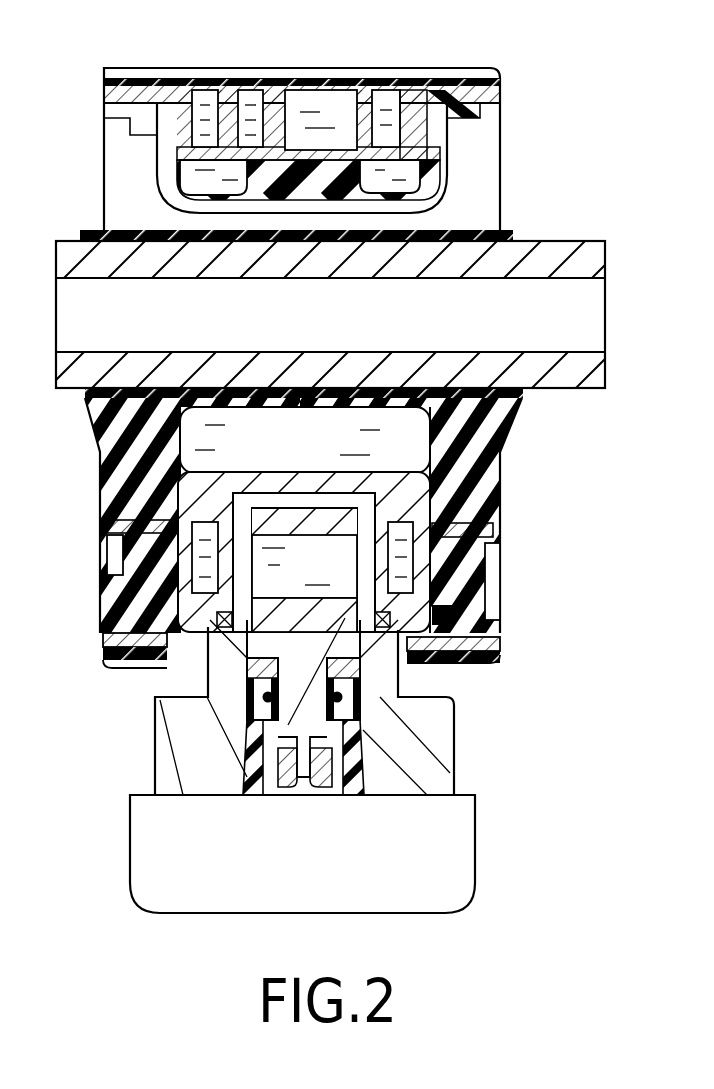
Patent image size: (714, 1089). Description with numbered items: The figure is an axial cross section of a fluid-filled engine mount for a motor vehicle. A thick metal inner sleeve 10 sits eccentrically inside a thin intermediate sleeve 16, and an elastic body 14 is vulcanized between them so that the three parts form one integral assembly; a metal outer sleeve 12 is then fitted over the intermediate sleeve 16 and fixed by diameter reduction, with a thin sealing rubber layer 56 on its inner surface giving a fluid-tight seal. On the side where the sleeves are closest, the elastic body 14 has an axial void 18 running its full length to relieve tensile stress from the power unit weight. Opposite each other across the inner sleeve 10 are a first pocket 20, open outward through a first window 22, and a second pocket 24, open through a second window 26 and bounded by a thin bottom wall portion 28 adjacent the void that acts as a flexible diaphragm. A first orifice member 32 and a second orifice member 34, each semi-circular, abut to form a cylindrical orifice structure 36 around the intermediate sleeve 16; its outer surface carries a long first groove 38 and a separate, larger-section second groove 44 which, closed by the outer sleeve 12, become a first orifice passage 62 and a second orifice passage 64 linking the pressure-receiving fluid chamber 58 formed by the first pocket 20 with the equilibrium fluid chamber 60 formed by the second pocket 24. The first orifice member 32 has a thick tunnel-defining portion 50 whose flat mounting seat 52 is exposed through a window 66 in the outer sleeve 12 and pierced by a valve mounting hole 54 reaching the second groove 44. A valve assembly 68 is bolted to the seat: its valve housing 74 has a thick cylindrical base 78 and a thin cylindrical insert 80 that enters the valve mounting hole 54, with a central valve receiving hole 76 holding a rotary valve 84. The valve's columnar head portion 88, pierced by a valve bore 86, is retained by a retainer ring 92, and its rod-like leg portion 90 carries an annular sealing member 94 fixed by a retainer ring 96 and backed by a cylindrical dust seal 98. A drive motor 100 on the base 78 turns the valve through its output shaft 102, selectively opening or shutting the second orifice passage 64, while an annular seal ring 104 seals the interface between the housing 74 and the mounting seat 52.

The inner sleeve 10 is at (558, 255).
The outer sleeve 12 is at (463, 72).
The elastic body 14 is at (110, 432).
The intermediate sleeve 16 is at (160, 95).
The axial void 18 is at (210, 223).
The first pocket 20 is at (433, 458).
The first window 22 is at (215, 662).
The second pocket 24 is at (413, 183).
The second window 26 is at (205, 158).
The bottom wall portion 28 is at (210, 197).
The first orifice member 32 is at (446, 618).
The second orifice member 34 is at (436, 114).
The orifice structure 36 is at (233, 445).
The first groove 38 is at (385, 110).
The second groove 44 is at (290, 110).
The tunnel-defining portion 50 is at (190, 495).
The mounting seat 52 is at (410, 673).
The valve mounting hole 54 is at (200, 558).
The sealing rubber layer 56 is at (337, 82).
The pressure-receiving fluid chamber 58 is at (325, 420).
The equilibrium fluid chamber 60 is at (378, 180).
The first orifice passage 62 is at (490, 555).
The second orifice passage 64 is at (311, 100).
The window 66 is at (220, 680).
The valve assembly 68 is at (473, 745).
The valve housing 74 is at (147, 774).
The valve receiving hole 76 is at (262, 512).
The cylindrical base 78 is at (438, 721).
The cylindrical insert 80 is at (405, 503).
The rotary valve 84 is at (316, 490).
The valve bore 86 is at (294, 538).
The head portion 88 is at (343, 613).
The leg portion 90 is at (247, 722).
The retainer ring 92 is at (222, 612).
The sealing member 94 is at (247, 660).
The retainer ring 96 is at (367, 705).
The dust seal 98 is at (365, 735).
The drive motor 100 is at (415, 887).
The output shaft 102 is at (290, 795).
The seal ring 104 is at (125, 590).